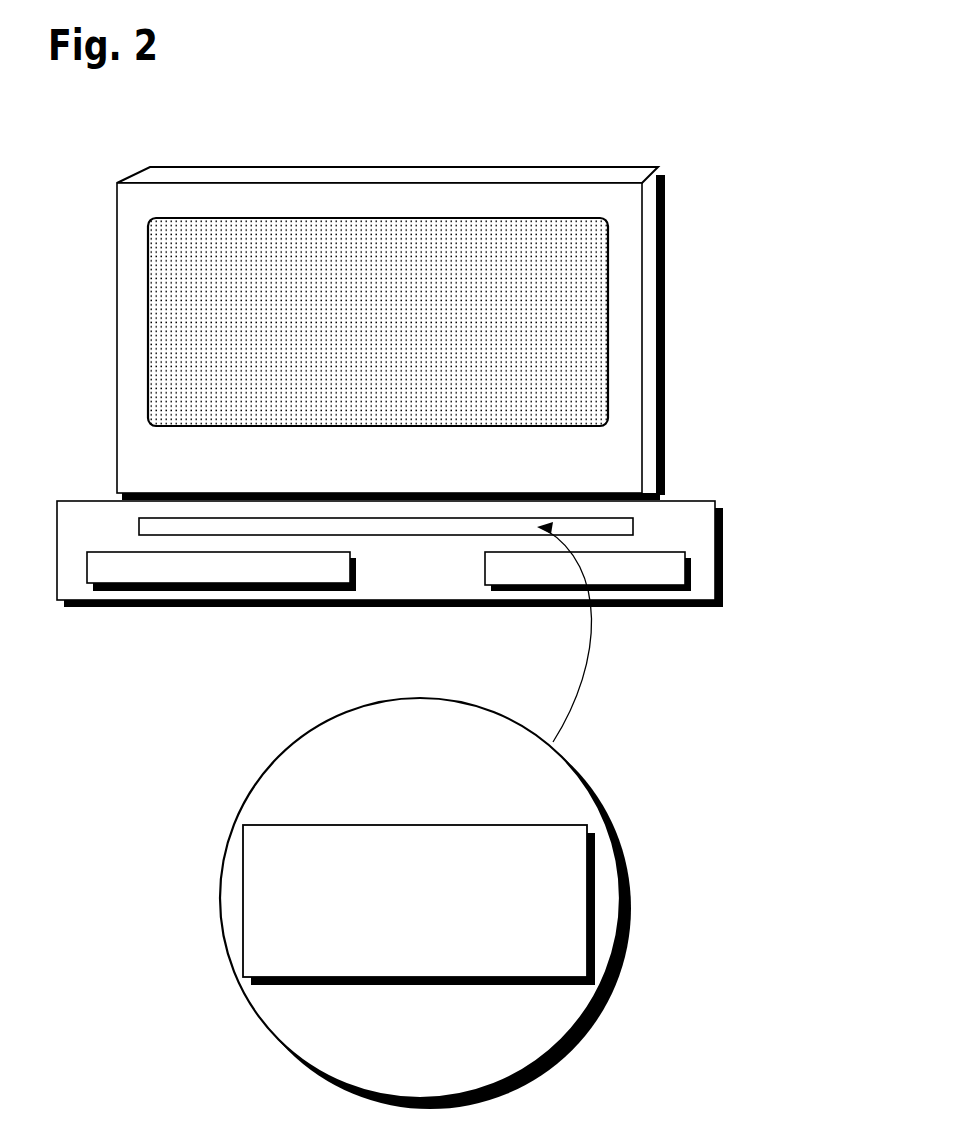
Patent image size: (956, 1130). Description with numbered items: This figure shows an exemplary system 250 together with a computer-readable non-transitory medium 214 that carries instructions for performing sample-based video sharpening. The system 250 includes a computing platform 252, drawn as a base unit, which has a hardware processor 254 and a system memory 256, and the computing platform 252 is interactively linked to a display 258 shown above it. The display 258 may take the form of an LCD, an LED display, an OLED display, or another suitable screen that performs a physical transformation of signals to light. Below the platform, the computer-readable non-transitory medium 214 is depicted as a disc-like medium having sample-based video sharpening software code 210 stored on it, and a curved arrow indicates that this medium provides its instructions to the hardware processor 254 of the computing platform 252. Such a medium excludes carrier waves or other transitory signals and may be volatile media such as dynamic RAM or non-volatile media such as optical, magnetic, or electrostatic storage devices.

The system 250 is at (772, 79).
The display 258 is at (470, 168).
The computing platform 252 is at (723, 554).
The hardware processor 254 is at (355, 570).
The system memory 256 is at (654, 552).
The computer-readable non-transitory medium 214 is at (222, 885).
The sample-based video sharpening software code 210 is at (428, 986).